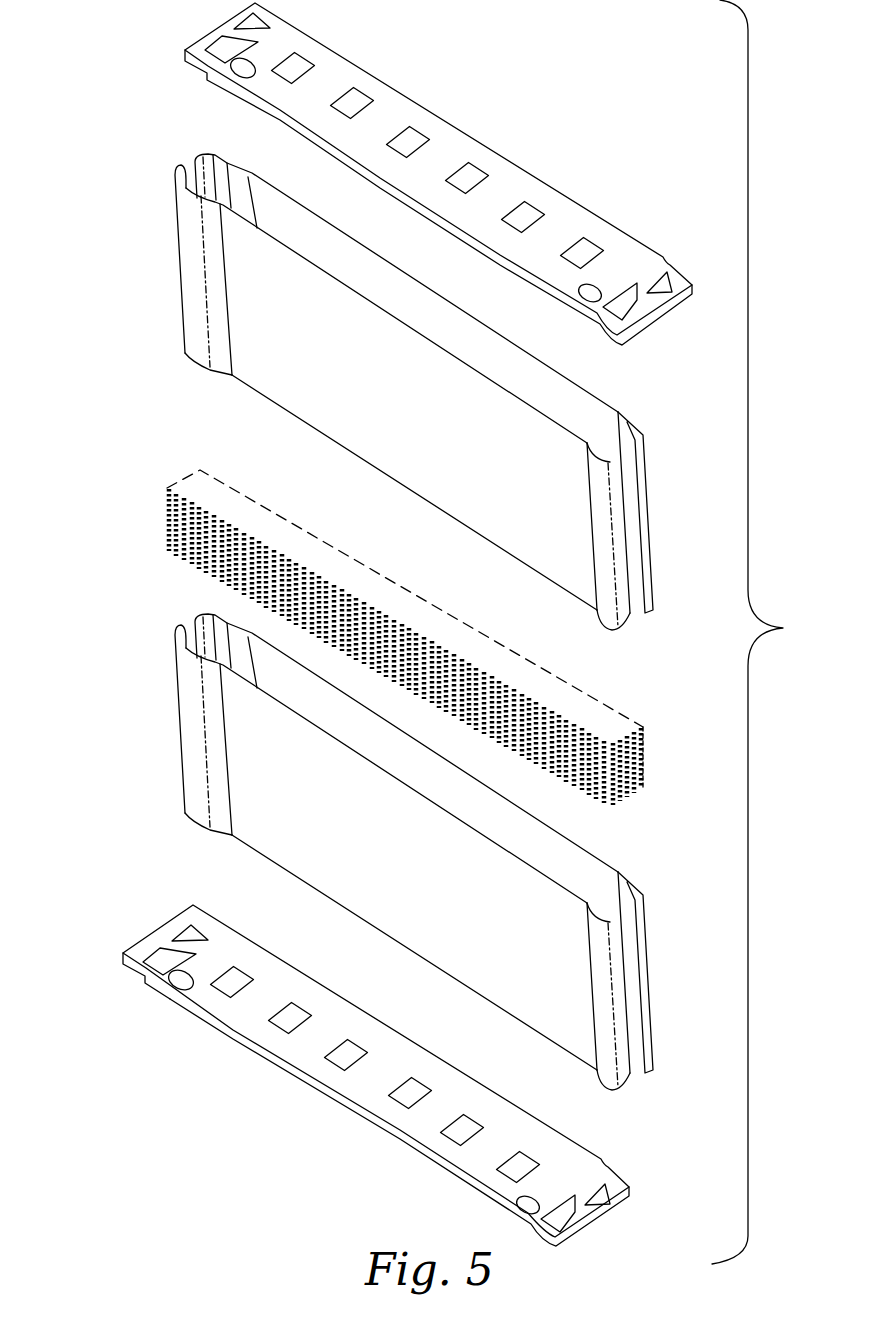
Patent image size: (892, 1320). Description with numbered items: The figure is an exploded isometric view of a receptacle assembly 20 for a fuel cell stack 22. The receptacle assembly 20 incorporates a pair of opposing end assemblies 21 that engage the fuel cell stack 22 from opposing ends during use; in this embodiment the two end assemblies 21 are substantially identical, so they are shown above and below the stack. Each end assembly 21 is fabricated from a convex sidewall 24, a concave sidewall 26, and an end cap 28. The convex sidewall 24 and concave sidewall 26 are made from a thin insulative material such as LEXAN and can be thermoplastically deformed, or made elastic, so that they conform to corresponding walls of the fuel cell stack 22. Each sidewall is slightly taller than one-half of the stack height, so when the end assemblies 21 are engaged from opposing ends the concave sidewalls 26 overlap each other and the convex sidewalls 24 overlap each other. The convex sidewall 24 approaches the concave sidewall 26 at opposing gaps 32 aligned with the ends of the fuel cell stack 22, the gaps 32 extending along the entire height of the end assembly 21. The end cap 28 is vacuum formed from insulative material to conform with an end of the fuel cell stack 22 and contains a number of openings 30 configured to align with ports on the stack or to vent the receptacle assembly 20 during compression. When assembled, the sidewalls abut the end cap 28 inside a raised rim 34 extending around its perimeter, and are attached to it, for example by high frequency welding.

The receptacle assembly 20 is at (784, 628).
The end assembly 21 is at (368, 624).
The fuel cell stack 22 is at (134, 489).
The convex sidewall 24 is at (430, 743).
The concave sidewall 26 is at (391, 859).
The end cap 28 is at (360, 1075).
The openings 30 is at (151, 975).
The gaps 32 is at (408, 854).
The raised rim 34 is at (300, 1075).